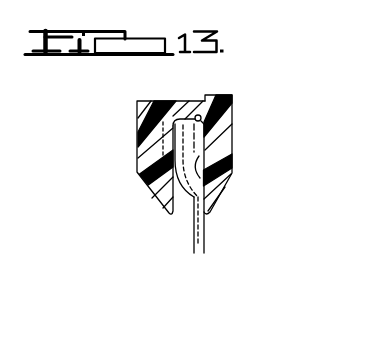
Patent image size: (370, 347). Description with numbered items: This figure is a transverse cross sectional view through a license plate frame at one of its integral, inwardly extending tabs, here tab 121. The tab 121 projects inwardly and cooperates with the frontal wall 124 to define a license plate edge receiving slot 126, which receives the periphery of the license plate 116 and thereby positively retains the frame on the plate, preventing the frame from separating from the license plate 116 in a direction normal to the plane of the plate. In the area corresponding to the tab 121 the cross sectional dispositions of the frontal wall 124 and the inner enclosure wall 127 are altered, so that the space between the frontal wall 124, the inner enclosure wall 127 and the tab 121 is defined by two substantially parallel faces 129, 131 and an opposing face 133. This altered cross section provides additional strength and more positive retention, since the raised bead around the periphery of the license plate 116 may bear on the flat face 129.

The license plate 116 is at (193, 243).
The tab 121 is at (204, 157).
The frontal wall 124 is at (145, 142).
The license plate edge receiving slot 126 is at (190, 124).
The inner enclosure wall 127 is at (154, 194).
The parallel face 129 is at (145, 132).
The parallel face 131 is at (230, 171).
The opposing face 133 is at (197, 124).